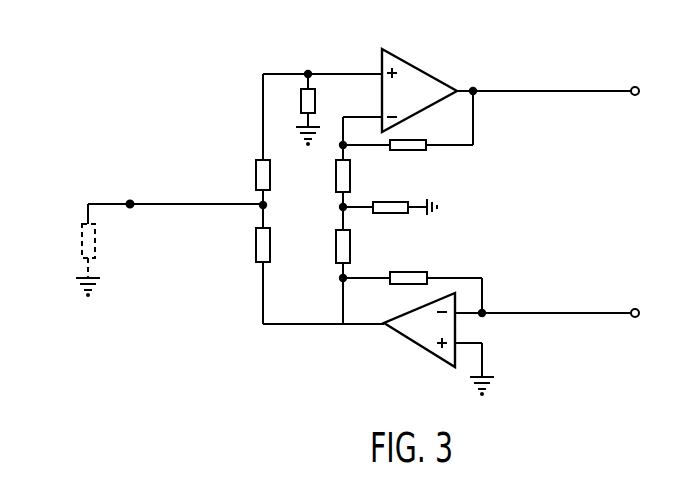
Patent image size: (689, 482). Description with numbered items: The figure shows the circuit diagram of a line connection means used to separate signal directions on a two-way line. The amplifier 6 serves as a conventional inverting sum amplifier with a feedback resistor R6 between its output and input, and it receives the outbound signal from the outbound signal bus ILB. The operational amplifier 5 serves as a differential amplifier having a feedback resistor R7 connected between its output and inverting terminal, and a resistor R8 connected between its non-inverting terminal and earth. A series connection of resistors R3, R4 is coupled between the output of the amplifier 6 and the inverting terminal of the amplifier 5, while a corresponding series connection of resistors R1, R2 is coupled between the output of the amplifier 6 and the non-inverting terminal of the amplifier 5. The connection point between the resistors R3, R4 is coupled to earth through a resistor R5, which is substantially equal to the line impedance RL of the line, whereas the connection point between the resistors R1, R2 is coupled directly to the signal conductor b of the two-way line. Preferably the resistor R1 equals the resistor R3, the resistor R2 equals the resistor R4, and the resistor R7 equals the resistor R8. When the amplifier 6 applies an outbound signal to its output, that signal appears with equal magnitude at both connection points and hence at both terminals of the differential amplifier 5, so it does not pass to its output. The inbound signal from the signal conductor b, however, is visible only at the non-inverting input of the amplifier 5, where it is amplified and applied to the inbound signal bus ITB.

The line impedance RL is at (82, 240).
The signal conductor b is at (151, 203).
The resistor R1 is at (257, 172).
The resistor R2 is at (256, 240).
The resistor R3 is at (336, 178).
The resistor R4 is at (336, 246).
The resistor R5 is at (376, 202).
The feedback resistor R6 is at (405, 272).
The feedback resistor R7 is at (415, 152).
The resistor R8 is at (318, 100).
The operational amplifier 5 is at (420, 63).
The amplifier 6 is at (409, 343).
The inbound signal bus ITB is at (553, 91).
The outbound signal bus ILB is at (553, 315).